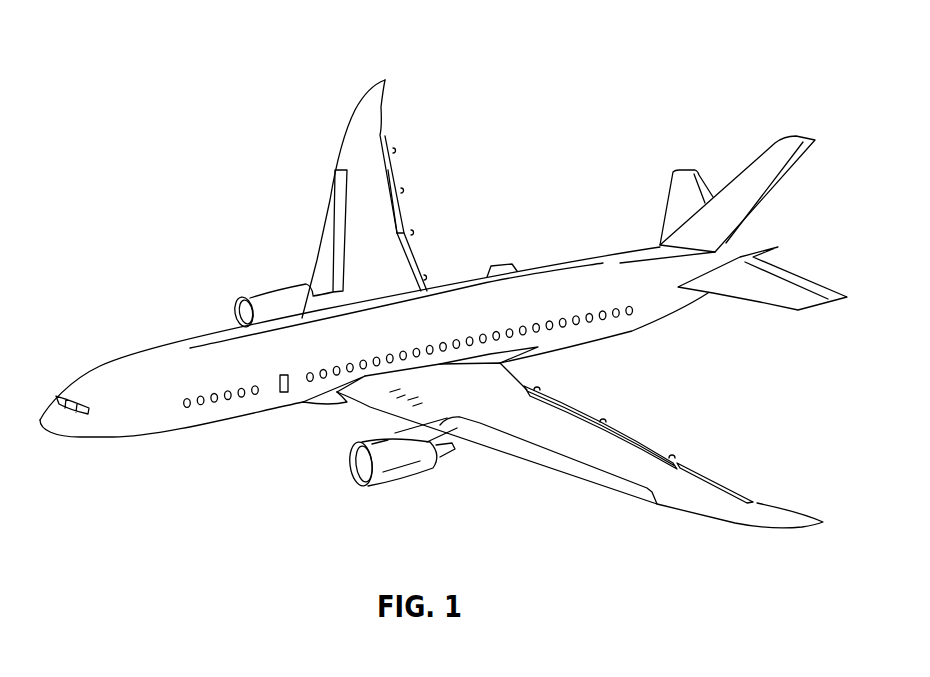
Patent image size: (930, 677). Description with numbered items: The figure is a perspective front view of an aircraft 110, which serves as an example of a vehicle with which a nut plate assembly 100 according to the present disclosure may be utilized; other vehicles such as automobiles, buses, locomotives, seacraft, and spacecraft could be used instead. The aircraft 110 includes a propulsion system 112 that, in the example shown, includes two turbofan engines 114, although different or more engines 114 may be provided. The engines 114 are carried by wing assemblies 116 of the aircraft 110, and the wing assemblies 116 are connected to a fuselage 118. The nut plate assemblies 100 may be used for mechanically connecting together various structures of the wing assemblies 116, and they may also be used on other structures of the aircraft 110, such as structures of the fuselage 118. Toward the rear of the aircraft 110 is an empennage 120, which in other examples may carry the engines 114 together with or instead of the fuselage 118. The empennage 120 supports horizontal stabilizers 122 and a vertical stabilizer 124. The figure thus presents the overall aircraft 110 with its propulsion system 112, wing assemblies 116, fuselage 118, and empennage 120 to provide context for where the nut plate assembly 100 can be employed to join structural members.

The nut plate assembly 100 is at (388, 406).
The aircraft 110 is at (216, 169).
The propulsion system 112 is at (236, 291).
The turbofan engines 114 is at (393, 462).
The wing assemblies 116 is at (666, 447).
The fuselage 118 is at (557, 278).
The empennage 120 is at (809, 221).
The horizontal stabilizers 122 is at (797, 280).
The vertical stabilizer 124 is at (763, 168).